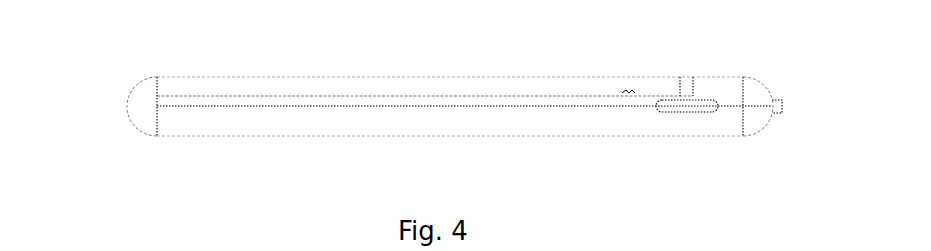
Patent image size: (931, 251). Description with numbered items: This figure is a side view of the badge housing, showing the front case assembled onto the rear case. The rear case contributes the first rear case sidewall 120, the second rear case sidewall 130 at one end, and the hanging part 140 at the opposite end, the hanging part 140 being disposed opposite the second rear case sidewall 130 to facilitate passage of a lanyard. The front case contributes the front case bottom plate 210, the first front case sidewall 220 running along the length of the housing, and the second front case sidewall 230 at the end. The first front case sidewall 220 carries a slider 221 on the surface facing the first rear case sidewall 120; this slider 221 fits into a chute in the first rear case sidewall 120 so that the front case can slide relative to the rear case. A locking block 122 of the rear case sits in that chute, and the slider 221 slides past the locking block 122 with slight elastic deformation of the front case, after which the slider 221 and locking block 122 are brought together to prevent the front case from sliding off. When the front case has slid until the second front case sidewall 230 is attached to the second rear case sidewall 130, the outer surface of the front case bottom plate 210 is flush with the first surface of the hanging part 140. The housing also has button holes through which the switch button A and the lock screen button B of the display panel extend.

The first rear case sidewall 120 is at (428, 123).
The locking block 122 is at (625, 91).
The second rear case sidewall 130 is at (129, 121).
The hanging part 140 is at (718, 85).
The front case bottom plate 210 is at (315, 77).
The first front case sidewall 220 is at (407, 87).
The slider 221 is at (639, 91).
The second front case sidewall 230 is at (136, 83).
The switch button A is at (776, 98).
The lock screen button B is at (690, 111).